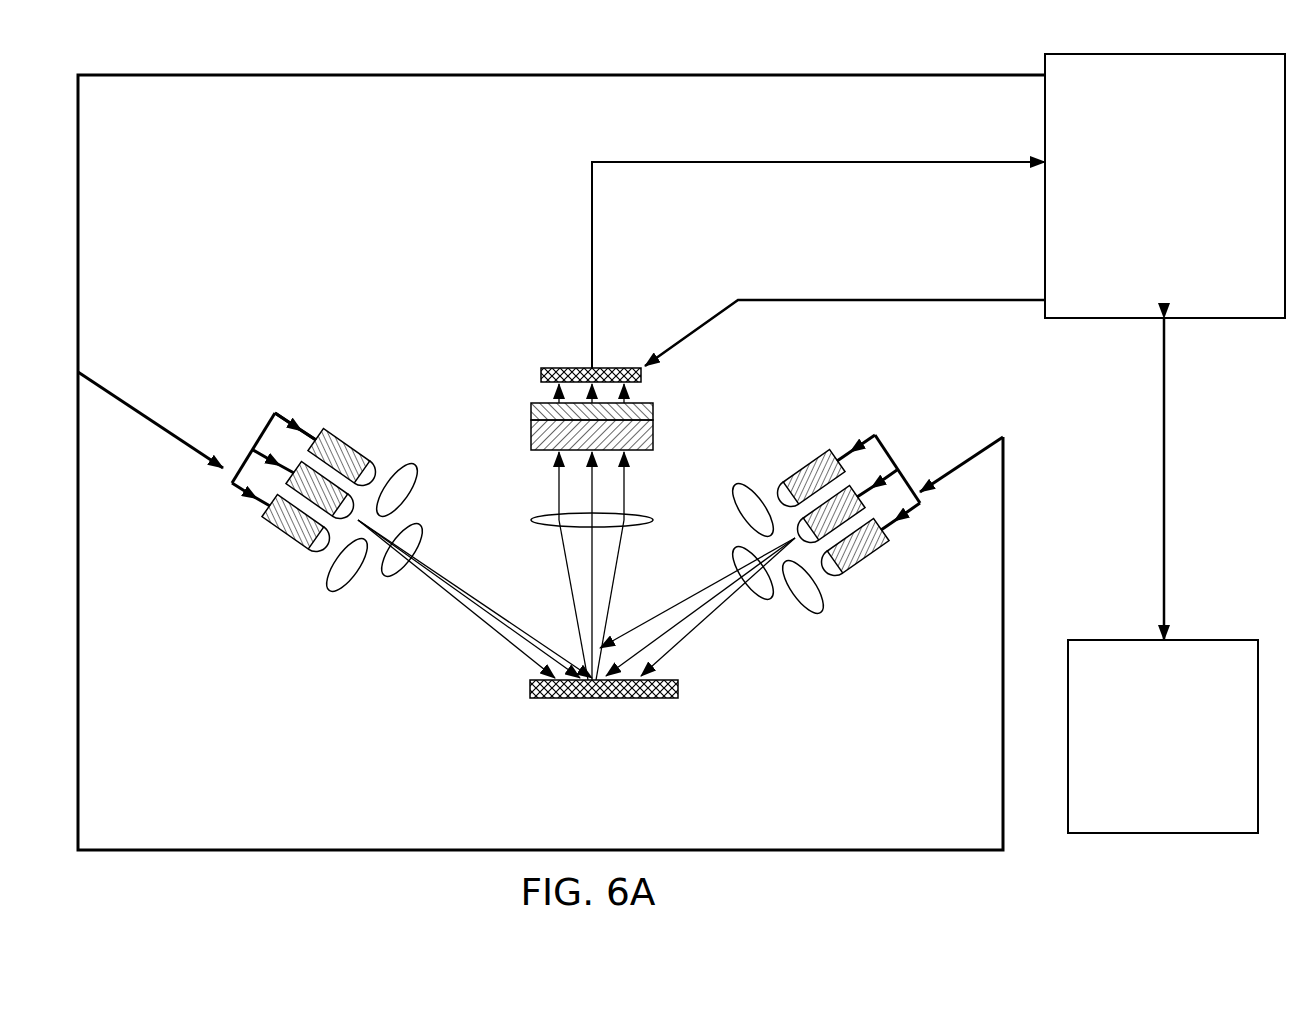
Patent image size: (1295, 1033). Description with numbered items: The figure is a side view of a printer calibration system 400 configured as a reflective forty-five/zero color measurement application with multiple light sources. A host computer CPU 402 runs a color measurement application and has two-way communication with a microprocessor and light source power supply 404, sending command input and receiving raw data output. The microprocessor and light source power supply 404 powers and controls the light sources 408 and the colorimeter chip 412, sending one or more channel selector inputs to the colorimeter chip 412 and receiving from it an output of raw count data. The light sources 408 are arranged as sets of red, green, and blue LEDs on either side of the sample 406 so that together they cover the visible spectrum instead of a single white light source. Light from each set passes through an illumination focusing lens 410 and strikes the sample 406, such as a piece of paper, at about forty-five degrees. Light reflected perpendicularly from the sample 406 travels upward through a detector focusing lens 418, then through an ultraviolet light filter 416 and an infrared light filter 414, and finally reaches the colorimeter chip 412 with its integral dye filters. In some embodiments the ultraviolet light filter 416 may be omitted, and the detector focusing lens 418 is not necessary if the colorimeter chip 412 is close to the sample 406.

The printer calibration system 400 is at (113, 36).
The host computer CPU 402 is at (1143, 693).
The microprocessor and light source power supply 404 is at (1143, 137).
The sample 406 is at (665, 701).
The light sources 408 is at (287, 567).
The illumination focusing lens 410 is at (358, 585).
The colorimeter chip 412 is at (541, 366).
The infrared light filter 414 is at (531, 405).
The ultraviolet light filter 416 is at (531, 428).
The detector focusing lens 418 is at (655, 517).